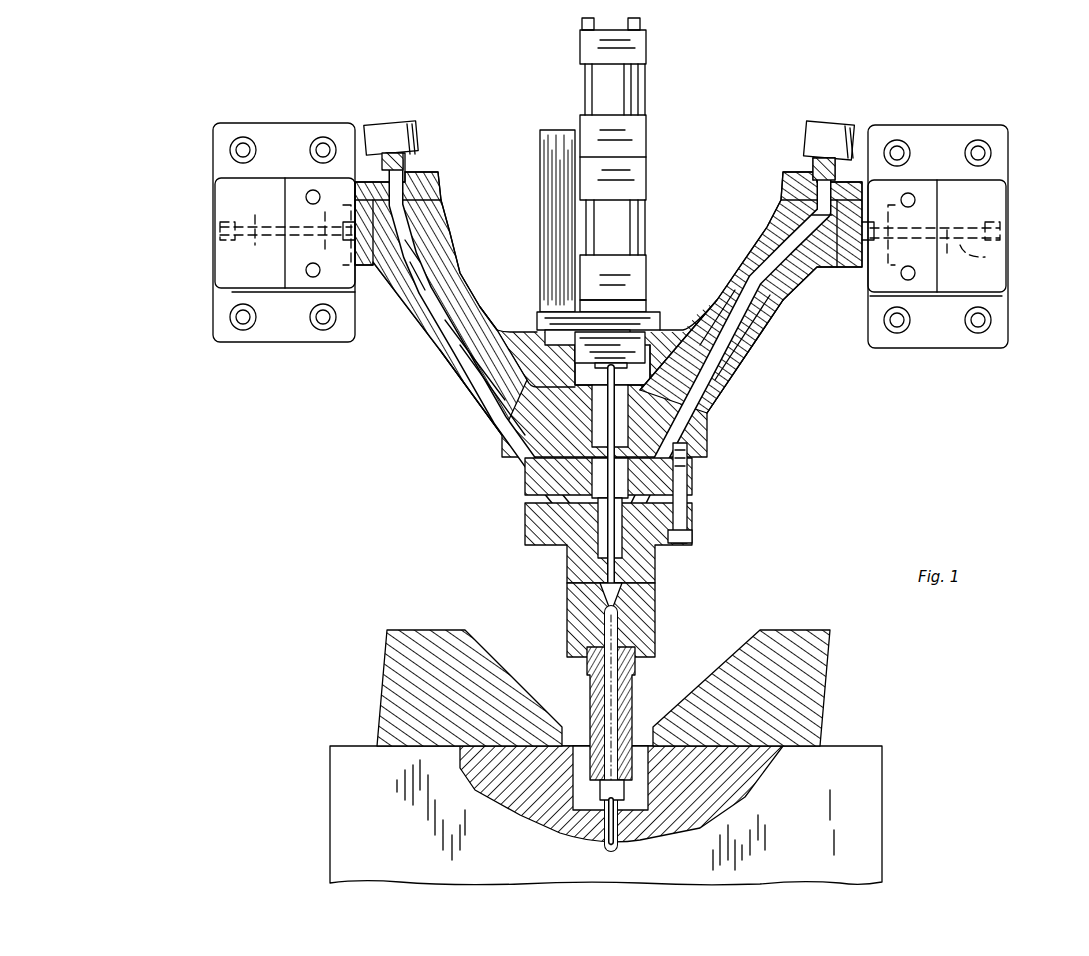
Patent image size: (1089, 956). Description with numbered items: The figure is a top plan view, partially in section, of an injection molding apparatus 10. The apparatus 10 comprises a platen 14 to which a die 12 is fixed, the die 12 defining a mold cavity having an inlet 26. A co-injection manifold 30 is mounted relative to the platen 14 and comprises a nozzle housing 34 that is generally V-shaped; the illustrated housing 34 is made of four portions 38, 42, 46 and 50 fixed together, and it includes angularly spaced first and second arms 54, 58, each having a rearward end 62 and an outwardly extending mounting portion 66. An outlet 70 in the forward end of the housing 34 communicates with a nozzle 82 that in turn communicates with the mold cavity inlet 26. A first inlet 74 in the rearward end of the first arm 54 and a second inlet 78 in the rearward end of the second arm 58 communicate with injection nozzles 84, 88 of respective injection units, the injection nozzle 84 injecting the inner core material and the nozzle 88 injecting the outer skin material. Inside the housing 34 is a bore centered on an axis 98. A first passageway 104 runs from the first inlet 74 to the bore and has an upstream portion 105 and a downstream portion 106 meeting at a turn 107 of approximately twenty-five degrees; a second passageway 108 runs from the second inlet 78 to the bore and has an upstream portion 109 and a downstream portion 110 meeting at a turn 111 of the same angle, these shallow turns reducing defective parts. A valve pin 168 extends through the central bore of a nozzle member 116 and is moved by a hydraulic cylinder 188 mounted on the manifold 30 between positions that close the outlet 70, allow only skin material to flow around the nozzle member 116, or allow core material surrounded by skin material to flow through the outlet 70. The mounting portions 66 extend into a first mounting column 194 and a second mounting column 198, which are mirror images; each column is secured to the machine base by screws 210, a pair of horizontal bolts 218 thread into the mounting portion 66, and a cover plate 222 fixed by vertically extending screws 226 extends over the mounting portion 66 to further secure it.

The injection molding apparatus 10 is at (292, 444).
The mold base 12 is at (855, 786).
The platen 14 is at (800, 684).
The mold cavity inlet 26 is at (606, 848).
The co-injection manifold 30 is at (758, 388).
The nozzle housing 34 is at (478, 458).
The housing portion 38 is at (468, 392).
The housing portion 42 is at (532, 487).
The housing portion 46 is at (532, 532).
The housing portion 50 is at (575, 618).
The first arm 54 is at (768, 232).
The second arm 58 is at (455, 290).
The rearward end 62 is at (458, 173).
The mounting portion 66 is at (373, 258).
The outlet 70 is at (625, 606).
The first inlet 74 is at (802, 203).
The second inlet 78 is at (412, 206).
The nozzle 82 is at (625, 716).
The injection nozzle 84 is at (832, 122).
The injection nozzle 88 is at (397, 122).
The axis 98 is at (607, 696).
The first passageway 104 is at (745, 322).
The upstream portion 105 is at (812, 196).
The downstream portion 106 is at (752, 296).
The turn 107 is at (816, 218).
The second passageway 108 is at (457, 338).
The upstream portion 109 is at (408, 240).
The downstream portion 110 is at (455, 330).
The turn 111 is at (416, 265).
The nozzle member 116 is at (628, 554).
The valve pin 168 is at (600, 557).
The hydraulic cylinder 188 is at (658, 106).
The first mounting column 194 is at (1010, 195).
The second mounting column 198 is at (205, 218).
The screws 210 is at (325, 138).
The bolts 218 is at (270, 240).
The cover plate 222 is at (293, 272).
The screws 226 is at (305, 198).